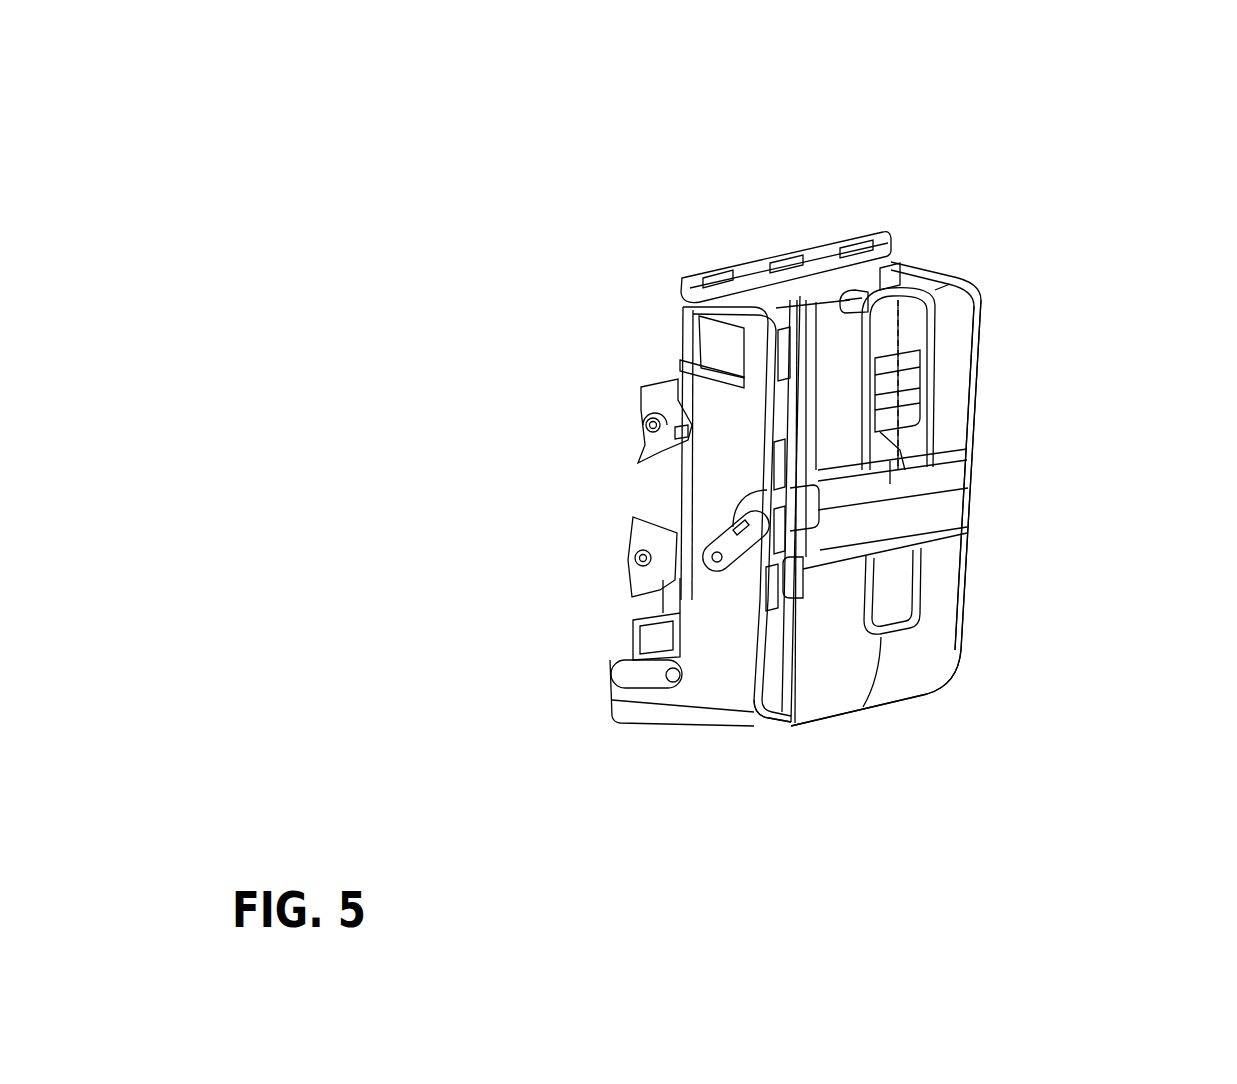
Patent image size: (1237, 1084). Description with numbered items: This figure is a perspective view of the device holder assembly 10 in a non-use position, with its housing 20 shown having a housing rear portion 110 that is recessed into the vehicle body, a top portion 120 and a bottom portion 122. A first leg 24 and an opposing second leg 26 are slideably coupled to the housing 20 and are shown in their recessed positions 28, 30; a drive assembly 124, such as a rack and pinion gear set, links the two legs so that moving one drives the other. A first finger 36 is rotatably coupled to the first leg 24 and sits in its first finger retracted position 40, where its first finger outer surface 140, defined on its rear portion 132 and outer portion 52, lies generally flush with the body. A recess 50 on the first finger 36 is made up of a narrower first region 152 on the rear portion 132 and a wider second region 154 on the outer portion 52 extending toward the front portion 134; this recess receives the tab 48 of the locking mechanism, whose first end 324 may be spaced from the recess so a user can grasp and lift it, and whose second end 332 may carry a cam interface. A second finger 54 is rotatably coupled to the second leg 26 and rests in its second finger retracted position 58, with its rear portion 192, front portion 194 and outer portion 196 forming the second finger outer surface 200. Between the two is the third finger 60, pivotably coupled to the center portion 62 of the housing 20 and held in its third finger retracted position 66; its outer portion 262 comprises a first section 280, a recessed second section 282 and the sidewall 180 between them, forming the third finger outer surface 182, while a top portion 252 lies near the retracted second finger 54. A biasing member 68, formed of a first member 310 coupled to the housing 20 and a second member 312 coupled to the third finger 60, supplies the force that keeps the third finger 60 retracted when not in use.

The device holder assembly 10 is at (655, 208).
The housing 20 is at (742, 680).
The first leg 24 is at (753, 390).
The second leg 26 is at (720, 632).
The recessed position 28 is at (737, 383).
The recessed position 30 is at (712, 663).
The first finger 36 is at (928, 290).
The first finger retracted position 40 is at (973, 283).
The tab 48 is at (903, 300).
The recess 50 is at (958, 408).
The outer portion 52 is at (713, 430).
The second finger 54 is at (782, 713).
The second finger retracted position 58 is at (820, 713).
The third finger 60 is at (940, 507).
The center portion 62 is at (757, 508).
The third finger retracted position 66 is at (890, 517).
The biasing member 68 is at (740, 543).
The housing rear portion 110 is at (687, 490).
The top portion 120 is at (745, 290).
The bottom portion 122 is at (700, 720).
The drive assembly 124 is at (640, 580).
The rear portion 132 is at (800, 310).
The front portion 134 is at (900, 488).
The first finger outer surface 140 is at (983, 327).
The first region 152 is at (860, 295).
The second region 154 is at (893, 440).
The sidewall 180 is at (913, 448).
The third finger outer surface 182 is at (947, 548).
The rear portion 192 is at (858, 698).
The front portion 194 is at (947, 550).
The outer portion 196 is at (940, 590).
The second finger outer surface 200 is at (940, 650).
The top portion 252 is at (573, 619).
The outer portion 262 is at (905, 498).
The first section 280 is at (763, 527).
The second section 282 is at (823, 450).
The first member 310 is at (712, 568).
The second member 312 is at (707, 503).
The first end 324 is at (950, 358).
The second end 332 is at (848, 297).